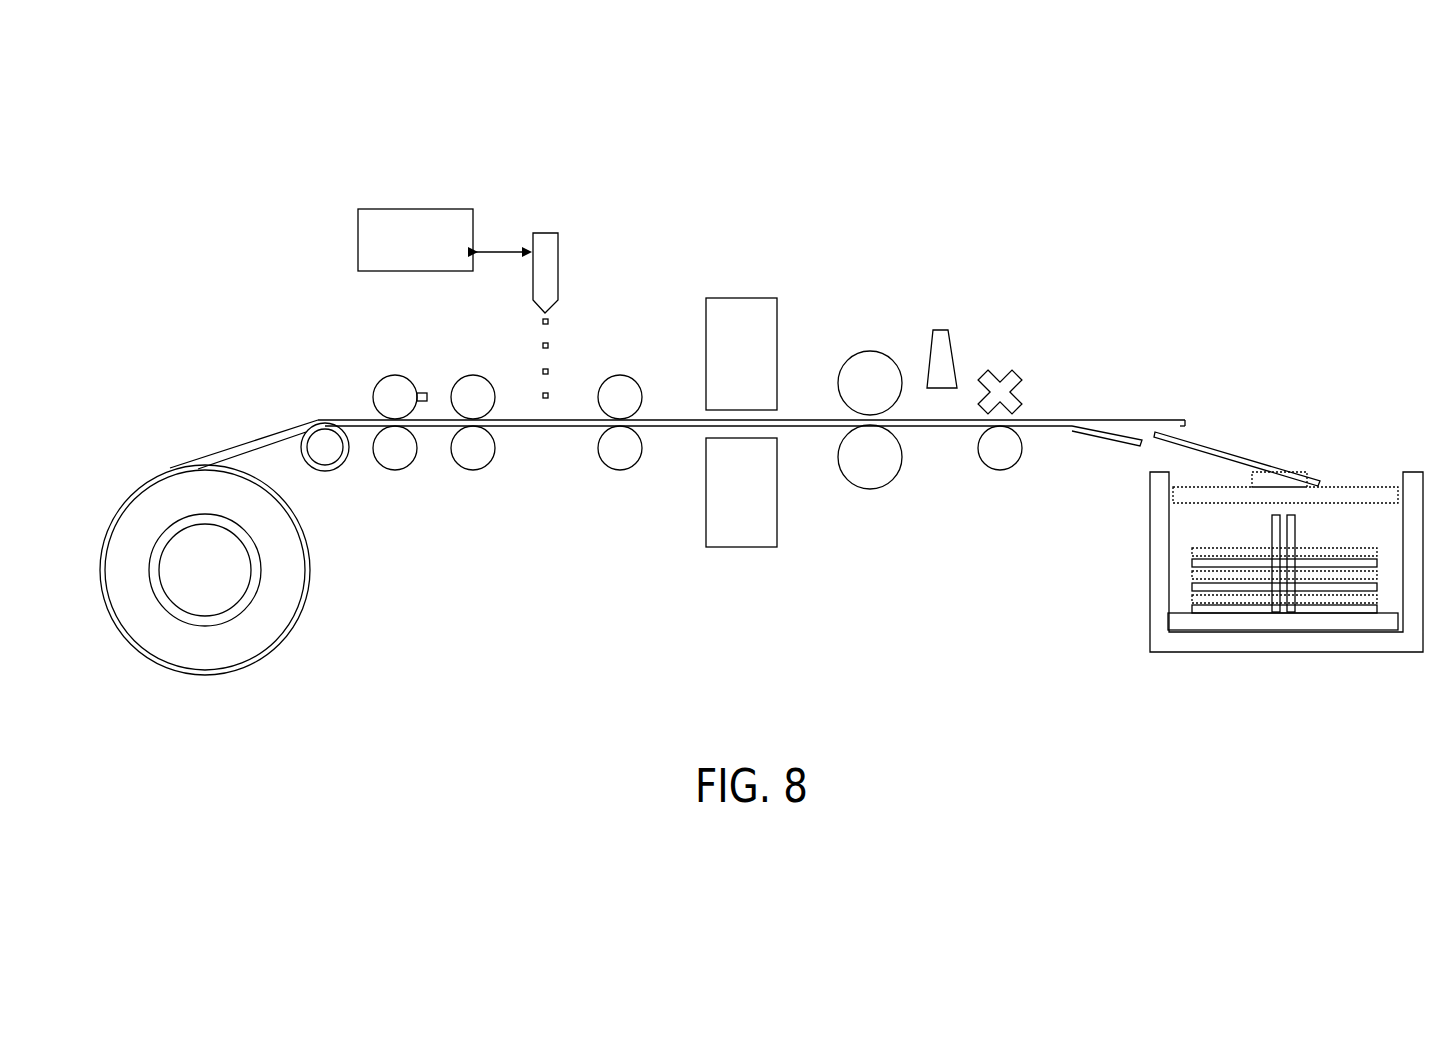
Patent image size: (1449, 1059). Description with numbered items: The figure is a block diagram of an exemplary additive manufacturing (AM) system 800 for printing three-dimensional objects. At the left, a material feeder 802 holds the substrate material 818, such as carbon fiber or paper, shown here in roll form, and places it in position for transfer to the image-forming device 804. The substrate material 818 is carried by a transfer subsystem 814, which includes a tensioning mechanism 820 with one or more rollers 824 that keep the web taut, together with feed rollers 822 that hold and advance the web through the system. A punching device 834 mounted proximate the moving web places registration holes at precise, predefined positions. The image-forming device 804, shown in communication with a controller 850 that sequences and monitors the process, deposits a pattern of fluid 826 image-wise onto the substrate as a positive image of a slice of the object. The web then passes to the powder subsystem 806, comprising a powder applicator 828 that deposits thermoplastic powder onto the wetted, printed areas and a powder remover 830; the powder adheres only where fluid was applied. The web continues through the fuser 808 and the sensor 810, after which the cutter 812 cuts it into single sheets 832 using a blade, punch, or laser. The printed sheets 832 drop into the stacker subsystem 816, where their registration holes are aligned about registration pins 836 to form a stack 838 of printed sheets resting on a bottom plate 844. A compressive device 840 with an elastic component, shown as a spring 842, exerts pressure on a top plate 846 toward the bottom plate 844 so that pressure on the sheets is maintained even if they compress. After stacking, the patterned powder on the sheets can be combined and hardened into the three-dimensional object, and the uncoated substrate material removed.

The AM system 800 is at (249, 205).
The material feeder 802 is at (208, 676).
The image-forming device 804 is at (547, 232).
The powder subsystem 806 is at (772, 290).
The fuser 808 is at (875, 352).
The sensor 810 is at (948, 330).
The cutter 812 is at (1005, 367).
The transfer subsystem 814 is at (345, 396).
The collection station 816 is at (1207, 669).
The substrate material 818 is at (270, 432).
The tensioning mechanism 820 is at (288, 408).
The feed rollers 822 is at (472, 375).
The rollers 824 is at (330, 473).
The fluid 826 is at (553, 345).
The powder applicator 828 is at (720, 298).
The powder remover 830 is at (723, 547).
The single sheets 832 is at (1220, 450).
The punching device 834 is at (393, 375).
The registration pins 836 is at (1270, 540).
The stack 838 is at (1185, 568).
The compressive device 840 is at (1392, 458).
The spring 842 is at (1302, 470).
The bottom plate 844 is at (1173, 625).
The top plate 846 is at (1350, 487).
The controller 850 is at (420, 209).